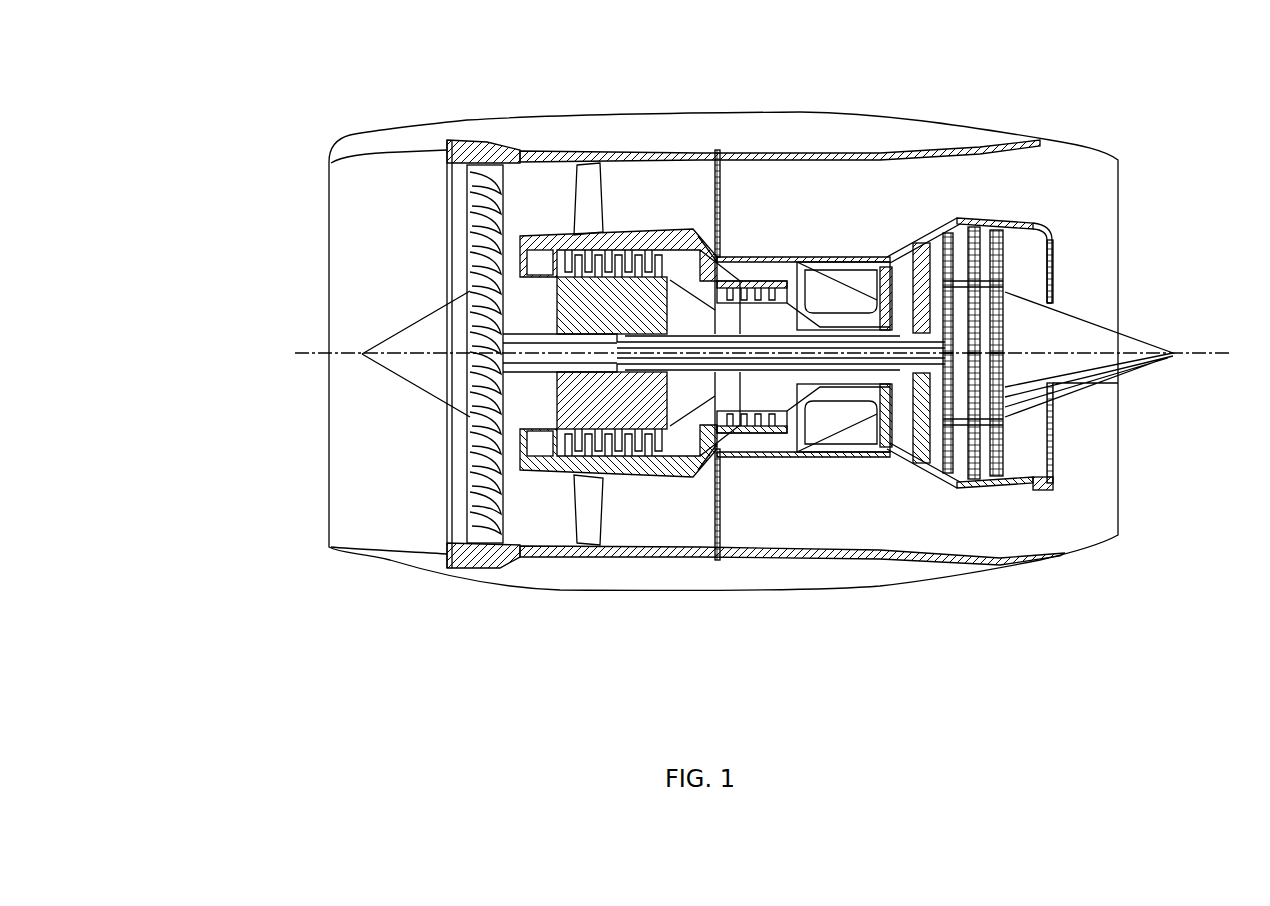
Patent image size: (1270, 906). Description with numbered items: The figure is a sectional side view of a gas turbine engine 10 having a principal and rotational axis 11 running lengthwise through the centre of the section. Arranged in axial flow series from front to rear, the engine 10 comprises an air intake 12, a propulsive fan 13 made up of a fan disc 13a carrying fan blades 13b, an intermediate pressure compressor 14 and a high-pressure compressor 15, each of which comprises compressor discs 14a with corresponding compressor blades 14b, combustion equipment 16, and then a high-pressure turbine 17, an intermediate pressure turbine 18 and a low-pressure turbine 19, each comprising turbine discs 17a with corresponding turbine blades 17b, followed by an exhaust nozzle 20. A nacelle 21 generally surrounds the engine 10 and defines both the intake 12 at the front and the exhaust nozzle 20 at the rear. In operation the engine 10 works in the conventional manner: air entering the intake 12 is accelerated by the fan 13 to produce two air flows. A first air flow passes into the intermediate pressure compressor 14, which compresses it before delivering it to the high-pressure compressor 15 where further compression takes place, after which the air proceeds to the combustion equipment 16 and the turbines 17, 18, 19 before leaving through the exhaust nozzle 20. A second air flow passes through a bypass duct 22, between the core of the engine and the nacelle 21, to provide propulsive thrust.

The gas turbine engine 10 is at (300, 201).
The principal and rotational axis 11 is at (318, 353).
The air intake 12 is at (403, 153).
The propulsive fan 13 is at (470, 508).
The fan disc 13a is at (940, 353).
The fan blades 13b is at (923, 443).
The intermediate pressure compressor 14 is at (613, 440).
The compressor discs 14a is at (788, 360).
The compressor blades 14b is at (760, 387).
The high-pressure compressor 15 is at (742, 287).
The combustion equipment 16 is at (830, 437).
The high-pressure turbine 17 is at (877, 453).
The turbine discs 17a is at (400, 357).
The turbine blades 17b is at (400, 410).
The intermediate pressure turbine 18 is at (917, 240).
The low-pressure turbine 19 is at (923, 467).
The exhaust nozzle 20 is at (1118, 535).
The nacelle 21 is at (883, 118).
The bypass duct 22 is at (656, 208).